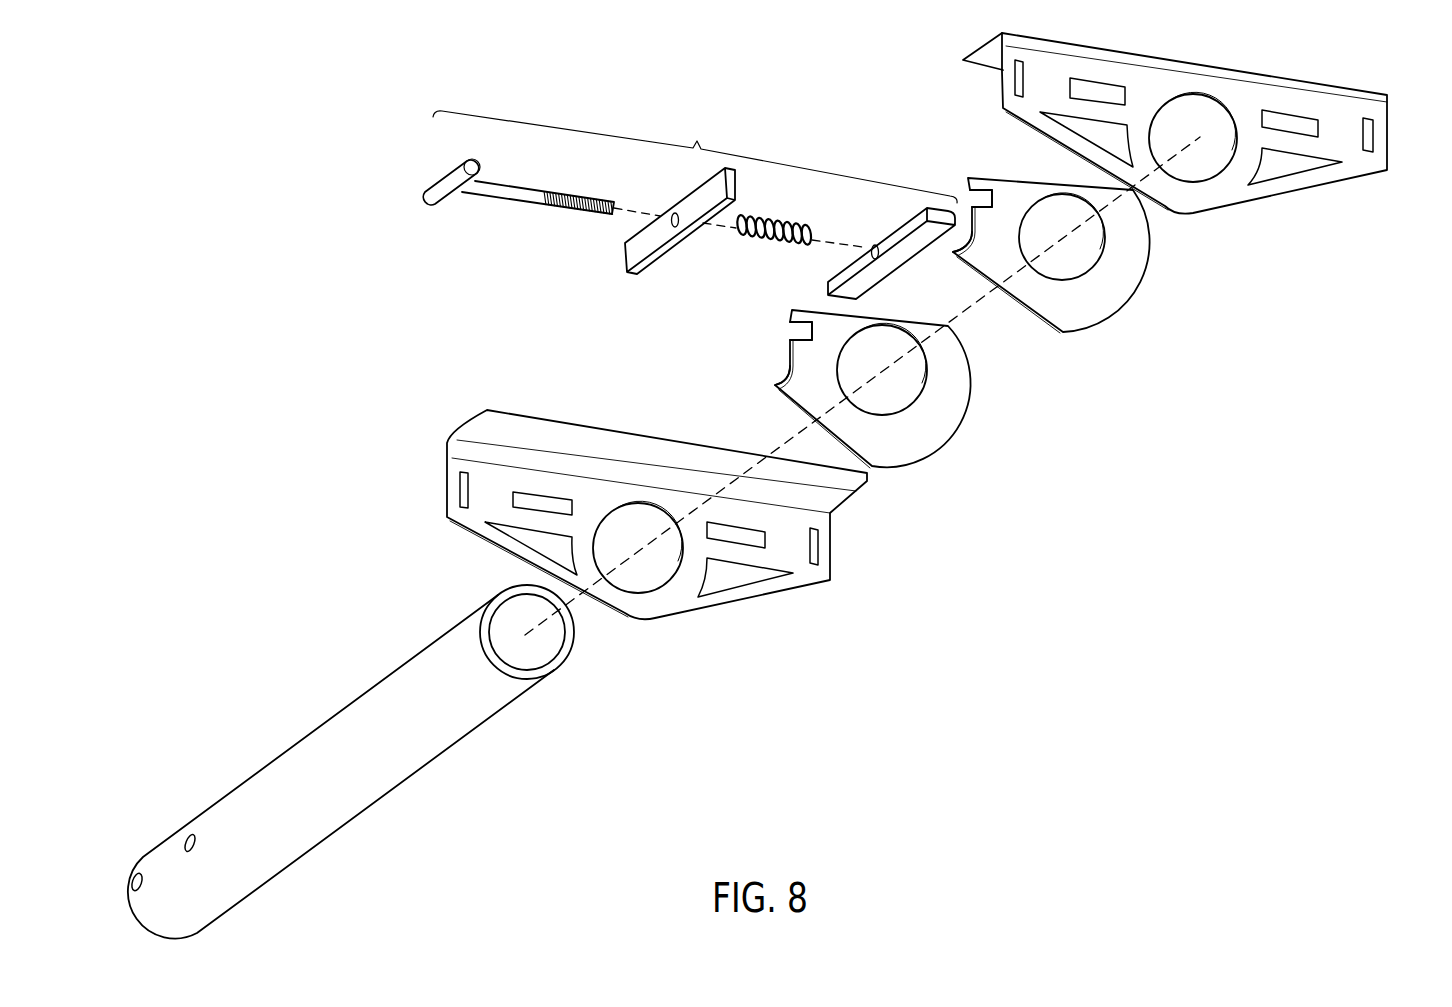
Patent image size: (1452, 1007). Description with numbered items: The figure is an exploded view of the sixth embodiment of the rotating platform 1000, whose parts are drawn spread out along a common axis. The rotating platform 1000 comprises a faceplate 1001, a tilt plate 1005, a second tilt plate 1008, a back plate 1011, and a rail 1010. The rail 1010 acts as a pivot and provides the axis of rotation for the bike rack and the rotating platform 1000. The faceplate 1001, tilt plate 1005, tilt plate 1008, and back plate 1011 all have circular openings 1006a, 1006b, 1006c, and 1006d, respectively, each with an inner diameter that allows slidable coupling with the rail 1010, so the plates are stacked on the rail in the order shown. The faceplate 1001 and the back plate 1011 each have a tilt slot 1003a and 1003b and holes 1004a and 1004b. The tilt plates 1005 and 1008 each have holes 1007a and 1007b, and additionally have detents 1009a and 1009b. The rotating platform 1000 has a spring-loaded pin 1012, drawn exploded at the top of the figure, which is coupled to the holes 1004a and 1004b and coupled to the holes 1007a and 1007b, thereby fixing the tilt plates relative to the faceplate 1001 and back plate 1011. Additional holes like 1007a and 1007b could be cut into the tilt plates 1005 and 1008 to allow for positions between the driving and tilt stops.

The rotating platform 1000 is at (167, 62).
The faceplate 1001 is at (1170, 132).
The tilt slot 1003a is at (1098, 82).
The tilt slot 1003b is at (521, 493).
The hole 1004a is at (1015, 78).
The hole 1004b is at (462, 492).
The tilt plate 1005 is at (1060, 253).
The circular opening 1006a is at (1201, 178).
The circular opening 1006b is at (1072, 276).
The circular opening 1006c is at (889, 414).
The circular opening 1006d is at (645, 592).
The hole 1007a is at (965, 194).
The hole 1007b is at (784, 332).
The tilt plate 1008 is at (876, 389).
The detent 1009a is at (773, 381).
The detent 1009b is at (958, 240).
The rail 1010 is at (378, 808).
The back plate 1011 is at (615, 543).
The spring-loaded pin 1012 is at (690, 205).